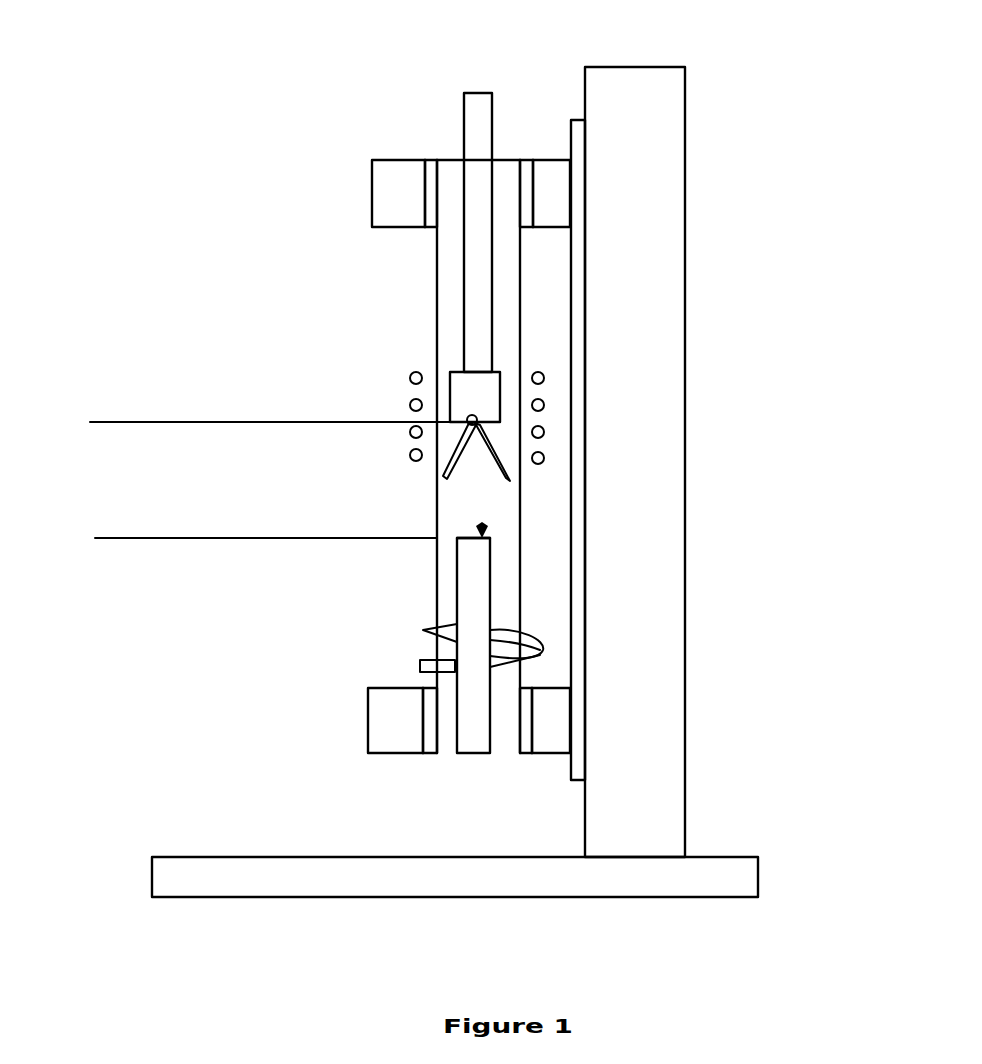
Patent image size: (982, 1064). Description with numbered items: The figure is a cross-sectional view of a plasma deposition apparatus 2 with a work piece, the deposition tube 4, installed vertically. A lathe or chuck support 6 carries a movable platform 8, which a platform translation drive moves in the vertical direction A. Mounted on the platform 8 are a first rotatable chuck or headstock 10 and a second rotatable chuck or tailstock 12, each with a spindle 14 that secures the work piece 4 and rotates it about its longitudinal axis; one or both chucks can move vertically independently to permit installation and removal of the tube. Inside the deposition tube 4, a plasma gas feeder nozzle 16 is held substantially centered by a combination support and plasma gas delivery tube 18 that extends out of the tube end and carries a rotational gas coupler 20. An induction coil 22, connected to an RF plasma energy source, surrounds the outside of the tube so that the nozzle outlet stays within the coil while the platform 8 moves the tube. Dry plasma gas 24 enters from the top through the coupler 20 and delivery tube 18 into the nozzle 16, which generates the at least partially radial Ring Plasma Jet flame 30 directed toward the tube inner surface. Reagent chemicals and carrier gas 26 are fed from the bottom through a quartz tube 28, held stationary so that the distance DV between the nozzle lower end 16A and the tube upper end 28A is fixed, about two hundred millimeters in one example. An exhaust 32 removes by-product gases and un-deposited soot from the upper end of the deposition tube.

The plasma deposition apparatus 2 is at (742, 330).
The deposition tube 4 is at (484, 519).
The lathe or chuck support 6 is at (625, 237).
The movable platform 8 is at (571, 343).
The headstock 10 is at (385, 208).
The tailstock 12 is at (388, 702).
The spindles 14 is at (425, 227).
The plasma gas feeder nozzle 16 is at (465, 412).
The lower end of the plasma gas feeder nozzle 16A is at (492, 420).
The combination support and plasma gas delivery tube 18 is at (462, 245).
The rotational gas coupler 20 is at (460, 113).
The induction coil 22 is at (409, 381).
The dry plasma gas 24 is at (480, 107).
The reagent chemicals and carrier gas 26 is at (476, 730).
The tube 28 is at (455, 570).
The upper end of the tube 28A is at (484, 519).
The Ring Plasma Jet flame 30 is at (497, 463).
The exhaust 32 is at (458, 180).
The vertical direction A is at (543, 486).
The distance DV is at (118, 430).